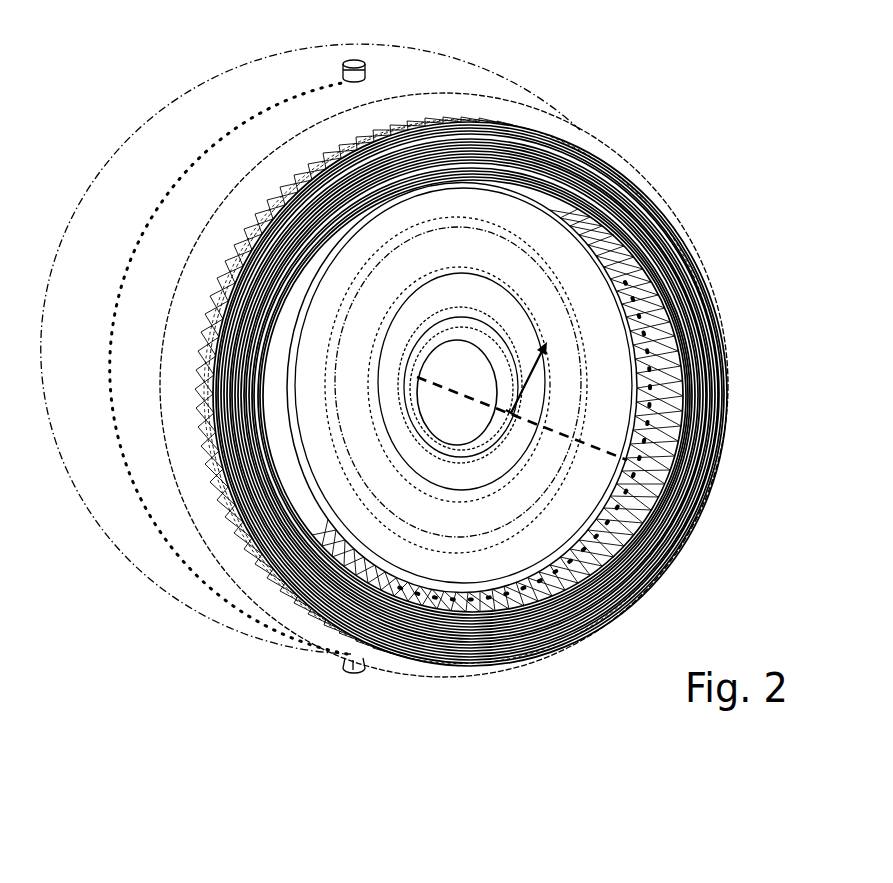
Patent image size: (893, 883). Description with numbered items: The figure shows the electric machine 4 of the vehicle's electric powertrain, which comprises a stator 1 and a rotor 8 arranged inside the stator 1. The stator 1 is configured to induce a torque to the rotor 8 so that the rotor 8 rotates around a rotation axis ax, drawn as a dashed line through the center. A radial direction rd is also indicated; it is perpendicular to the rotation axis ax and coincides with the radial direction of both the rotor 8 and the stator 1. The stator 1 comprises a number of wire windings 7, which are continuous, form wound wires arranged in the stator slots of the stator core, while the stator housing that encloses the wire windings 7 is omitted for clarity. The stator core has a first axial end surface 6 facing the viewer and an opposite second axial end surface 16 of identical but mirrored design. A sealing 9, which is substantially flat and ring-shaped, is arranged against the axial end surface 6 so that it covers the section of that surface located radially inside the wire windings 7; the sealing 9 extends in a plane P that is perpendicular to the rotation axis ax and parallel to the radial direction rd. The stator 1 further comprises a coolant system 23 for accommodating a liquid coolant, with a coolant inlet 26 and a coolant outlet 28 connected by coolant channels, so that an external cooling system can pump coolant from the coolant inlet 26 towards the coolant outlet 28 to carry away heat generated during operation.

The stator 1 is at (575, 130).
The electric machine 4 is at (656, 78).
The first axial end surface 6 is at (607, 224).
The wire windings 7 is at (676, 250).
The rotor 8 is at (568, 500).
The sealing 9 is at (647, 345).
The second axial end surface 16 is at (147, 108).
The coolant system 23 is at (117, 332).
The coolant inlet 26 is at (365, 62).
The coolant outlet 28 is at (346, 669).
The plane P is at (622, 333).
The radial direction rd is at (528, 378).
The rotation axis ax is at (586, 446).